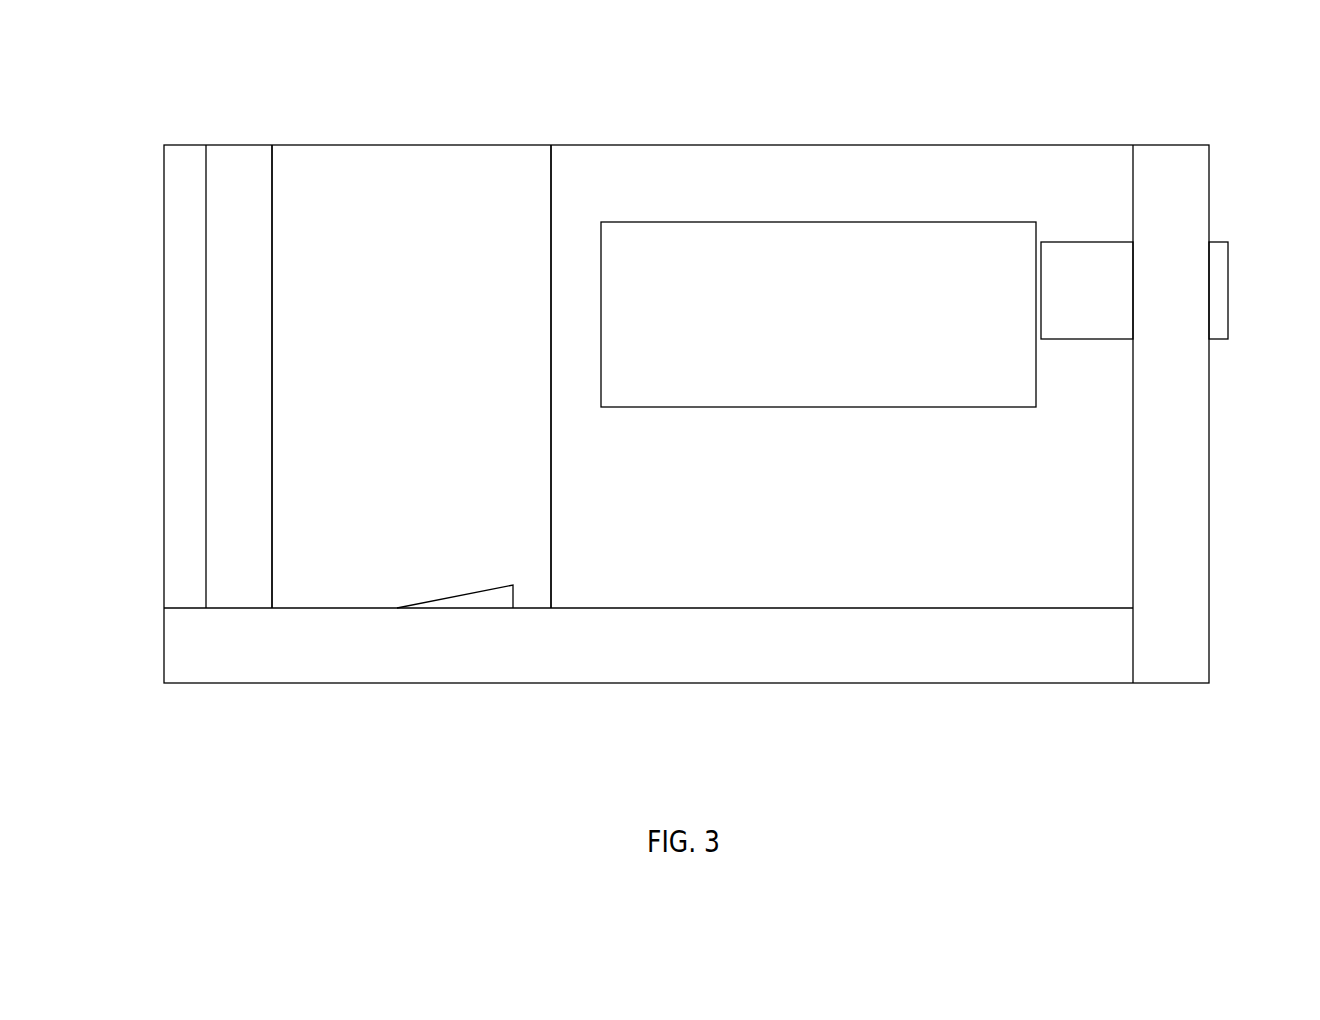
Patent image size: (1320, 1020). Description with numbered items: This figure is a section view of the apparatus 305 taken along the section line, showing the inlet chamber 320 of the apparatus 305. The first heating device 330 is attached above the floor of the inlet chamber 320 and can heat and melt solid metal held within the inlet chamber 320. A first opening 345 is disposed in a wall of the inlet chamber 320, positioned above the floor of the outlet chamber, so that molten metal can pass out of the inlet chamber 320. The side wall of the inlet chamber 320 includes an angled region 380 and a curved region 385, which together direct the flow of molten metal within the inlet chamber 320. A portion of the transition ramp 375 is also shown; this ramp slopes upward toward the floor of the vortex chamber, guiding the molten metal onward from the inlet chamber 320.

The apparatus 305 is at (183, 78).
The curved region 385 is at (232, 160).
The angled region 380 is at (323, 167).
The inlet chamber 320 is at (813, 514).
The first opening 345 is at (788, 242).
The first heating device 330 is at (1079, 295).
The transition ramp 375 is at (487, 597).